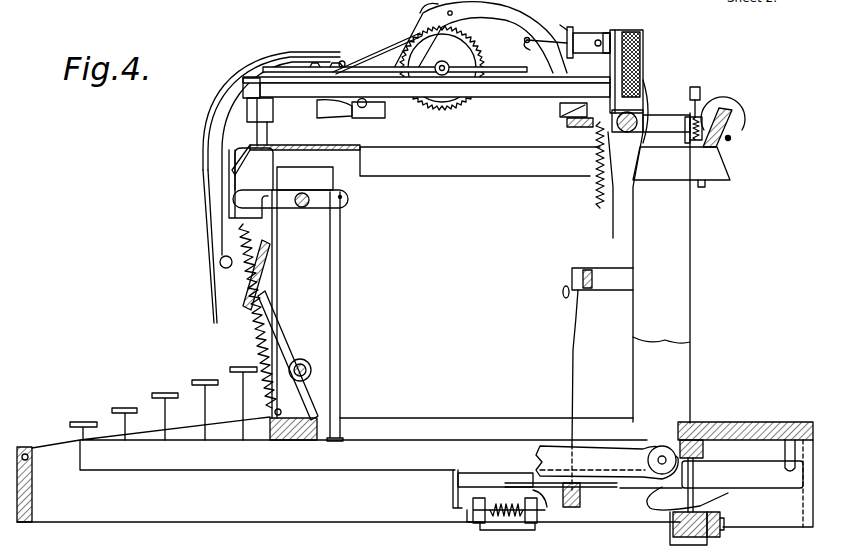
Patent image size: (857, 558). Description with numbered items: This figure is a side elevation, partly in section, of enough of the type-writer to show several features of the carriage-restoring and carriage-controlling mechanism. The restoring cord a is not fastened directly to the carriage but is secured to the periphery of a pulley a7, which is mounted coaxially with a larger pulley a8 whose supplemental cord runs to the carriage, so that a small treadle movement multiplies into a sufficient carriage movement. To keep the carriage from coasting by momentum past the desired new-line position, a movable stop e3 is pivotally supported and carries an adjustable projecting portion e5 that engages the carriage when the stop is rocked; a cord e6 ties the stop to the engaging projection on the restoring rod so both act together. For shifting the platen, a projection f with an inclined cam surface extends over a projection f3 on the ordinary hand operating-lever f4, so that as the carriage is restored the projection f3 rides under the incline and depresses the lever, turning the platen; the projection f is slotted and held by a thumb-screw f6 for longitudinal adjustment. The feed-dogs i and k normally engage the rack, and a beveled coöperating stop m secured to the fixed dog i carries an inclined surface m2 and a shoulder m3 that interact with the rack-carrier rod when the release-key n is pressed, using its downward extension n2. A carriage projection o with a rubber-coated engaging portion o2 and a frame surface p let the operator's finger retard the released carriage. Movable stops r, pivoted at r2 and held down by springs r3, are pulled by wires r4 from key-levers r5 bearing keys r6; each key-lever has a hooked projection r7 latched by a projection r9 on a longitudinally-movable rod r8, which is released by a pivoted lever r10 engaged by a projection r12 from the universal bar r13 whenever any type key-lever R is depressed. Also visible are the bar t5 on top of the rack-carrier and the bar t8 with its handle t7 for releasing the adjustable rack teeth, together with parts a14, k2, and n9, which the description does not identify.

The cord a is at (613, 225).
The pulley a7 is at (627, 36).
The larger pulley a8 is at (640, 42).
The block a14 is at (557, 110).
The movable stop e3 is at (596, 135).
The projecting portion e5 is at (578, 121).
The cord e6 is at (596, 166).
The projection f is at (588, 33).
The projection f3 is at (557, 15).
The hand operating-lever f4 is at (480, 56).
The thumb-screw f6 is at (532, 53).
The fixed dog i is at (702, 163).
The feed-dog k is at (681, 151).
The pin k2 is at (731, 139).
The coöperating stop m is at (742, 110).
The inclined surface m2 is at (742, 118).
The shoulder m3 is at (742, 126).
The release-key n is at (342, 61).
The extension n2 is at (222, 92).
The disk n9 is at (723, 116).
The projection o is at (222, 150).
The engaging portion o2 is at (220, 262).
The surface p is at (251, 305).
The movable stops r is at (248, 184).
The pivot r2 is at (302, 208).
The springs r3 is at (270, 346).
The wires r4 is at (342, 327).
The key-levers r5 is at (348, 469).
The key r6 is at (166, 392).
The hooked projection r7 is at (453, 492).
The longitudinally-movable rod r8 is at (480, 524).
The projection r9 is at (453, 524).
The pivoted lever r10 is at (543, 492).
The projection r12 is at (525, 482).
The universal bar r13 is at (580, 504).
The type key-levers R is at (547, 446).
The bar t5 is at (688, 118).
The handle t7 is at (699, 93).
The bar t8 is at (690, 92).